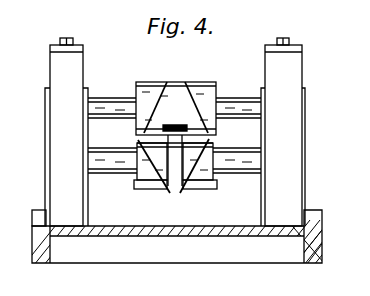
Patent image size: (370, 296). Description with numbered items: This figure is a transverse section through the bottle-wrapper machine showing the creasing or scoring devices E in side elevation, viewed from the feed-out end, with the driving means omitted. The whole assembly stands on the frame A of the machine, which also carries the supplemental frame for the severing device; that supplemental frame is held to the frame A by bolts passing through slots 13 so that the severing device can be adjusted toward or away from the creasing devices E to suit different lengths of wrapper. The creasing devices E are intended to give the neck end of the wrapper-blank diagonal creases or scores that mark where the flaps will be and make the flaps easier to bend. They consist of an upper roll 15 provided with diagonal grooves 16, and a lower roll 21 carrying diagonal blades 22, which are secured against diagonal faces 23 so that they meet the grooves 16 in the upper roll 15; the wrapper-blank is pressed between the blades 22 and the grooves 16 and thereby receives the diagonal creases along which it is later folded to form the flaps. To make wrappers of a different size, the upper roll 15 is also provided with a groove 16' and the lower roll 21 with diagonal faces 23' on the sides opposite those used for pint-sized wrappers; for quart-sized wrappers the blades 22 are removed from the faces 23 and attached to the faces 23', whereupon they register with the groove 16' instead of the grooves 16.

The slots 13 is at (283, 132).
The creasing or scoring devices E is at (220, 71).
The diagonal grooves 16 is at (165, 93).
The upper roll 15 is at (191, 82).
The groove 16' is at (175, 117).
The diagonal blades 22 is at (143, 143).
The lower roll 21 is at (217, 181).
The diagonal faces 23 is at (173, 177).
The diagonal faces 23' is at (163, 201).
The frame A is at (190, 248).